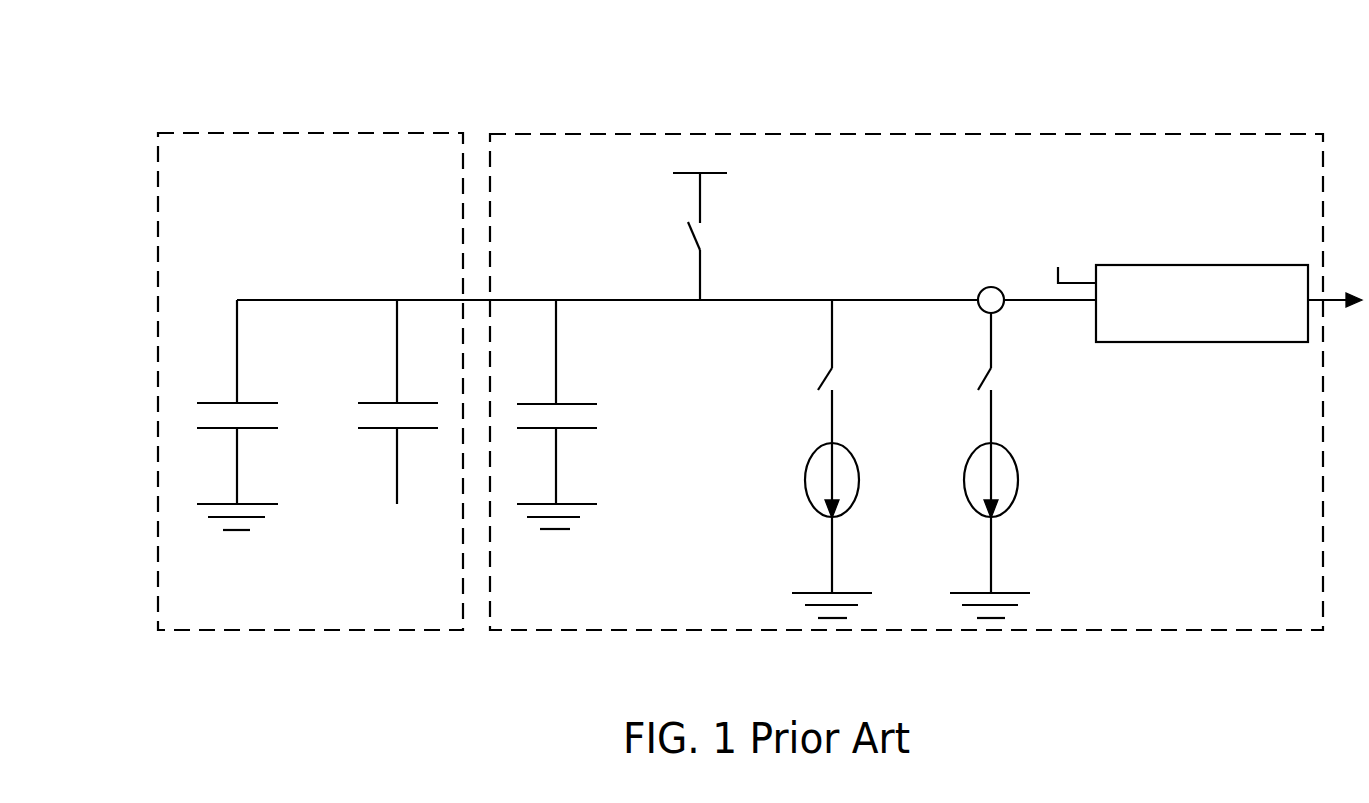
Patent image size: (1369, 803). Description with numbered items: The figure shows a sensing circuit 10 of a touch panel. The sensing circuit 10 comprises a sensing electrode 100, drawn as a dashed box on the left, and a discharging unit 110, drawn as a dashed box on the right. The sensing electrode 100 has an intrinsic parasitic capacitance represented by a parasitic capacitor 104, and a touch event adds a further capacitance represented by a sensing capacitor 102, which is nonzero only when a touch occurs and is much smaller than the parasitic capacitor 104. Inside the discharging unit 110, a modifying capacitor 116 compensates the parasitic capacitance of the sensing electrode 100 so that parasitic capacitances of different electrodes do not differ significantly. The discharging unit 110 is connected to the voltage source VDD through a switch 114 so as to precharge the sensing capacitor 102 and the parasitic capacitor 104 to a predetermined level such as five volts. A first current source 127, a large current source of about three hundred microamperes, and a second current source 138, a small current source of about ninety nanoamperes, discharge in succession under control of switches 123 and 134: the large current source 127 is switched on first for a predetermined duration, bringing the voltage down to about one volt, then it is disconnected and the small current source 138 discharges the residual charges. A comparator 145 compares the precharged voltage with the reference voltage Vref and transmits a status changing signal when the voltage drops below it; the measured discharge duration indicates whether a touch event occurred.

The sensing circuit 10 is at (1298, 700).
The sensing electrode 100 is at (332, 133).
The discharging unit 110 is at (605, 133).
The sensing capacitor 102 is at (200, 415).
The parasitic capacitor 104 is at (367, 427).
The switch 114 is at (688, 213).
The modifying capacitor 116 is at (588, 414).
The switch 123 is at (818, 373).
The first current source 127 is at (809, 504).
The switch 134 is at (975, 373).
The second current source 138 is at (1030, 504).
The comparator 145 is at (1190, 263).